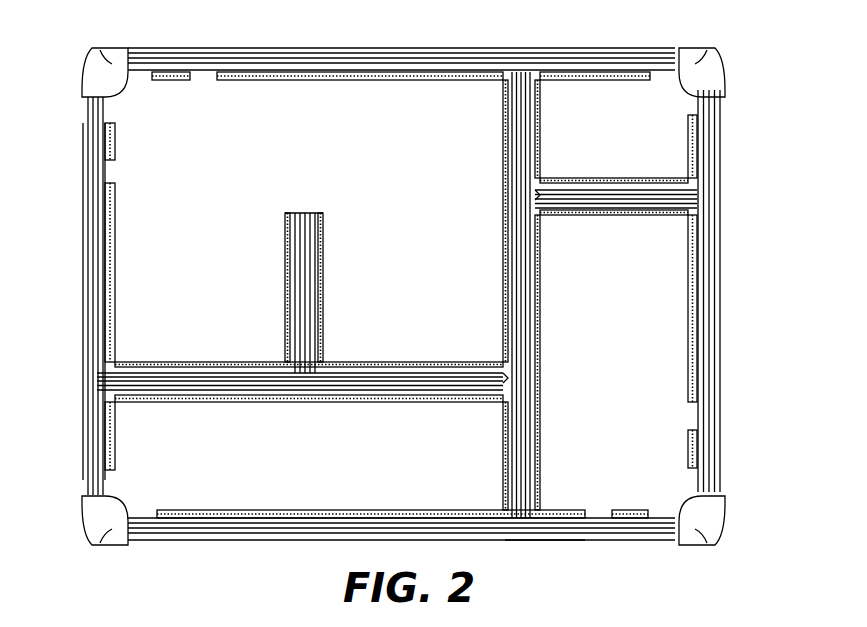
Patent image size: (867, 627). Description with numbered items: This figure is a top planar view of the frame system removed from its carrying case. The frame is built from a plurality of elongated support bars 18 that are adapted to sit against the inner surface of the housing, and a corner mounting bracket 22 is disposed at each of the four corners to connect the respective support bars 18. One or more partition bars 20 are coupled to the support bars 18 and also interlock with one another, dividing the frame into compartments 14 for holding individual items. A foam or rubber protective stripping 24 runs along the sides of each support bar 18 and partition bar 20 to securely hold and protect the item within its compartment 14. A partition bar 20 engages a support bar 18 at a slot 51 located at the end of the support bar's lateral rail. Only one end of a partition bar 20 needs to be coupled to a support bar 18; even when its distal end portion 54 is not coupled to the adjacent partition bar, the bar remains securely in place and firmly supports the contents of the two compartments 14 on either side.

The compartment 14 is at (416, 295).
The support bar 18 is at (455, 47).
The partition bar 20 is at (397, 295).
The corner mounting bracket 22 is at (115, 68).
The protective stripping 24 is at (118, 142).
The slot 51 is at (535, 540).
The distal end portion 54 is at (540, 200).